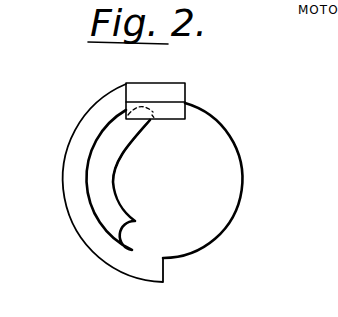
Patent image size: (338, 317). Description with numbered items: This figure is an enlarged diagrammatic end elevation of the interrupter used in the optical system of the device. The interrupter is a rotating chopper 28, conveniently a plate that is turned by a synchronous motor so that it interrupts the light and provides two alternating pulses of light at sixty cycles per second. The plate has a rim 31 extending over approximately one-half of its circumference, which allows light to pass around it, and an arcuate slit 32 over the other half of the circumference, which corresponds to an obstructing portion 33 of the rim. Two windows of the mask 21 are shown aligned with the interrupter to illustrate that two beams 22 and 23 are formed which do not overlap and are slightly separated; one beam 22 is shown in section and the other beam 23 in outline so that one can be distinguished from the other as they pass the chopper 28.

The mask 21 is at (153, 82).
The beam 22 is at (176, 92).
The beam 23 is at (167, 113).
The rotating chopper 28 is at (105, 107).
The rim 31 is at (235, 135).
The arcuate slit 32 is at (97, 146).
The obstructing portion 33 is at (227, 203).